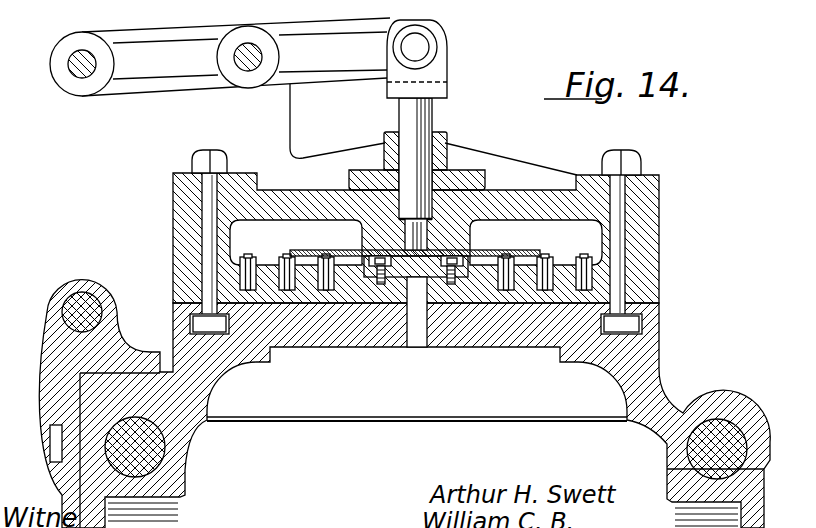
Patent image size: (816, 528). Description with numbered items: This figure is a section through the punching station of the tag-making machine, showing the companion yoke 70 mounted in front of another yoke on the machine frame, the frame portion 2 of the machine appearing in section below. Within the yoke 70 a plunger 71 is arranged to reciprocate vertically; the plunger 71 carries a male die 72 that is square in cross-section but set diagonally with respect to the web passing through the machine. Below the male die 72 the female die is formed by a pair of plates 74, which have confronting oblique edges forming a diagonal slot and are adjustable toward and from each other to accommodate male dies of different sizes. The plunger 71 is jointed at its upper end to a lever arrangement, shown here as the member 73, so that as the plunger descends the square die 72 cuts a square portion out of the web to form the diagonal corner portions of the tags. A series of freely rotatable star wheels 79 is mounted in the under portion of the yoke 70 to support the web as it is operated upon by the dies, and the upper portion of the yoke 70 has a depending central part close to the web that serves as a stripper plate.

The pivot pin 2 is at (150, 452).
The companion yoke 70 is at (482, 170).
The plunger 71 is at (418, 113).
The male die 72 is at (449, 167).
The operating lever 73 is at (348, 22).
The plates 74 is at (360, 264).
The star wheels 79 is at (249, 262).